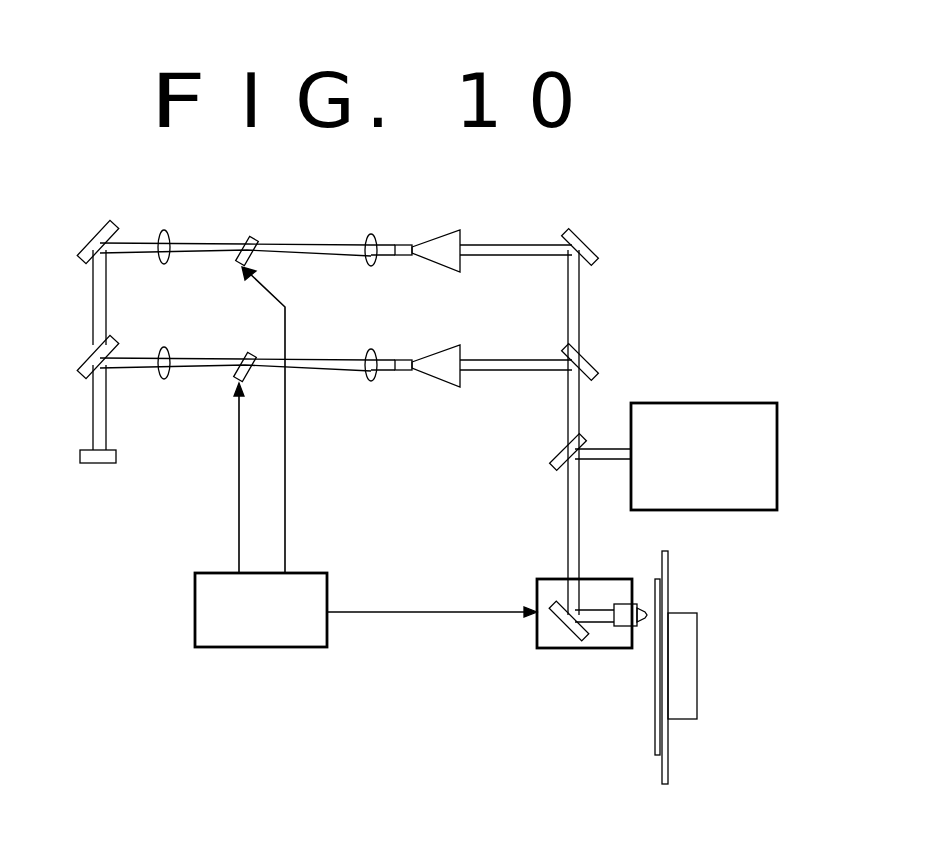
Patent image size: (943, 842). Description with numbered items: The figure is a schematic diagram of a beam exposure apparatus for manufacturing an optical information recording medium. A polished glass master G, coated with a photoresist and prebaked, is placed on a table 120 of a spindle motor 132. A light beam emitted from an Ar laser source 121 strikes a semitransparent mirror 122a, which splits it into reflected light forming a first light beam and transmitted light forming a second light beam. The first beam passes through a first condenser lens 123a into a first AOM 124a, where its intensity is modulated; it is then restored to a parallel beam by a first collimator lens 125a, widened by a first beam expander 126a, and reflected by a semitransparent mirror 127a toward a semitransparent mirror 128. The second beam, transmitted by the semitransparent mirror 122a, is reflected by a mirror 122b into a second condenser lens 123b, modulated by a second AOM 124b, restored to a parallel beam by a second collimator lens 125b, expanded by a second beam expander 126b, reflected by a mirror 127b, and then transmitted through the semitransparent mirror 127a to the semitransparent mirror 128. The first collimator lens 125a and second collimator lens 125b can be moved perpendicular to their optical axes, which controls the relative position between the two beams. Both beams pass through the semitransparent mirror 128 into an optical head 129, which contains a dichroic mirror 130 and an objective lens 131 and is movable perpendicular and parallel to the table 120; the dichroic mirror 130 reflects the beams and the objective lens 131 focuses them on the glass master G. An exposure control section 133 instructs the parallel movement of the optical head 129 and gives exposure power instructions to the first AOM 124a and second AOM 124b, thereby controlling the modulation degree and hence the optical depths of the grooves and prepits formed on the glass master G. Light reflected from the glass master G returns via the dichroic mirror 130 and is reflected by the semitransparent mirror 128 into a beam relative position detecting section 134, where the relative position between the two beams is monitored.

The table 120 is at (669, 571).
The Ar laser source 121 is at (97, 464).
The semitransparent mirror 122a is at (85, 361).
The mirror 122b is at (85, 248).
The first condenser lens 123a is at (164, 379).
The second condenser lens 123b is at (164, 264).
The first AOM 124a is at (243, 357).
The second AOM 124b is at (244, 240).
The first collimator lens 125a is at (371, 381).
The second collimator lens 125b is at (371, 266).
The first beam expander 126a is at (437, 387).
The second beam expander 126b is at (437, 271).
The semitransparent mirror 127a is at (598, 367).
The mirror 127b is at (598, 253).
The semitransparent mirror 128 is at (555, 452).
The optical head 129 is at (547, 578).
The dichroic mirror 130 is at (563, 625).
The objective lens 131 is at (621, 628).
The spindle motor 132 is at (698, 672).
The exposure control section 133 is at (261, 649).
The beam relative position detecting section 134 is at (745, 402).
The glass master G is at (654, 750).